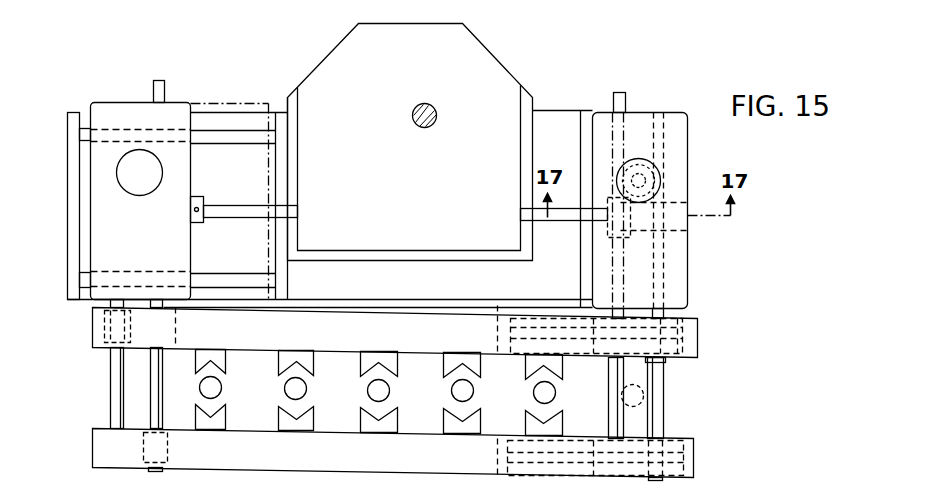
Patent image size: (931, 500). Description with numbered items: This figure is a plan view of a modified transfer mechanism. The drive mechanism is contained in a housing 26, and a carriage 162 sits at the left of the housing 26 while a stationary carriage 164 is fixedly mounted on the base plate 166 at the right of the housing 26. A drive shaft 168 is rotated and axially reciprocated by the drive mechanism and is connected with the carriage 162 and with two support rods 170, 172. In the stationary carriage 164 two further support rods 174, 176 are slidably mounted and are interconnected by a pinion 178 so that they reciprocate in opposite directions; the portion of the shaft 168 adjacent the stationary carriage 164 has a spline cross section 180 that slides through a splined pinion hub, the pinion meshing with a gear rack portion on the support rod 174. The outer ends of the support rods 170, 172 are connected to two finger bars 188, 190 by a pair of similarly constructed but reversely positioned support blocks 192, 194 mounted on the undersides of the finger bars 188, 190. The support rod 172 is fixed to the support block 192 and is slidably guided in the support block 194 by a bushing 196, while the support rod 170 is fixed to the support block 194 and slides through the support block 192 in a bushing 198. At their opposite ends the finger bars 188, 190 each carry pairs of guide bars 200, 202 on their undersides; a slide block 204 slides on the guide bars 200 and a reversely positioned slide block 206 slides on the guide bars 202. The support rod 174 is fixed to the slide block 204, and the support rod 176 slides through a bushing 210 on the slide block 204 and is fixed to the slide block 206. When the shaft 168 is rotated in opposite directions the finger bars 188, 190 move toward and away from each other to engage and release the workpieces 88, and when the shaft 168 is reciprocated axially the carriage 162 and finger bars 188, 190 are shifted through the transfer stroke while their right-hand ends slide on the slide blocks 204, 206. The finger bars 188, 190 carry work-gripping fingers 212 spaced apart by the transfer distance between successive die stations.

The housing 26 is at (515, 68).
The workpieces 88 is at (368, 385).
The carriage 162 is at (177, 110).
The stationary carriage 164 is at (677, 112).
The base plate 166 is at (563, 110).
The drive shaft 168 is at (227, 207).
The support rod 170 is at (115, 372).
The support rod 172 is at (152, 392).
The support rod 174 is at (617, 375).
The support rod 176 is at (658, 398).
The pinion 178 is at (660, 165).
The spline cross section 180 is at (567, 223).
The finger bar 188 is at (243, 337).
The finger bar 190 is at (238, 438).
The support block 192 is at (178, 334).
The support block 194 is at (105, 457).
The bushing 196 is at (170, 453).
The bushing 198 is at (105, 323).
The guide bars 200 is at (503, 320).
The guide bars 202 is at (533, 470).
The slide block 204 is at (697, 335).
The slide block 206 is at (693, 455).
The bushing 210 is at (657, 360).
The work-gripping fingers 212 is at (385, 357).